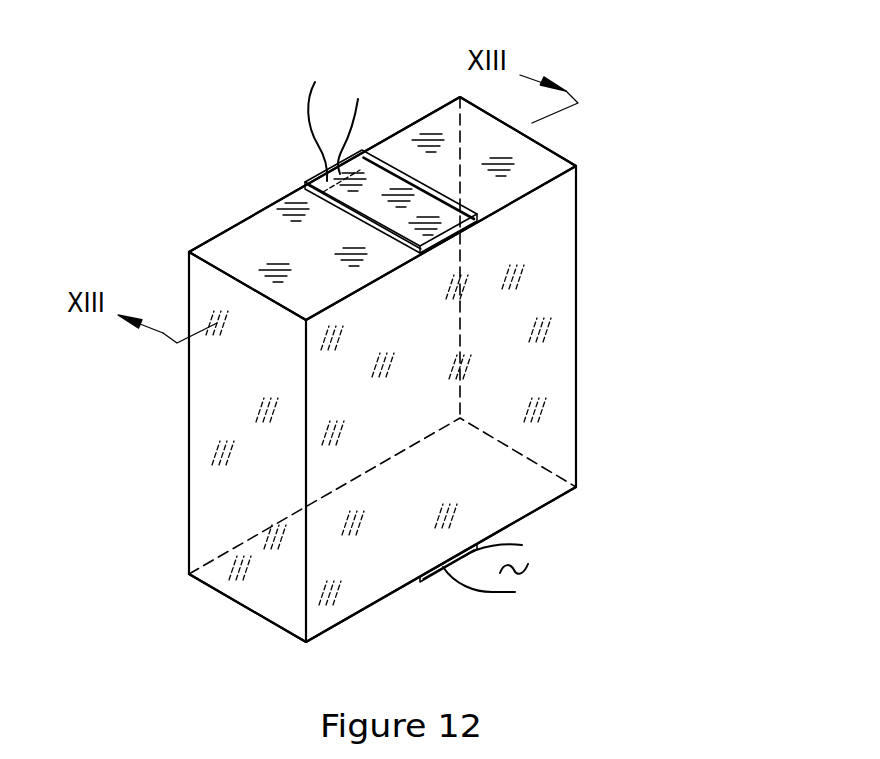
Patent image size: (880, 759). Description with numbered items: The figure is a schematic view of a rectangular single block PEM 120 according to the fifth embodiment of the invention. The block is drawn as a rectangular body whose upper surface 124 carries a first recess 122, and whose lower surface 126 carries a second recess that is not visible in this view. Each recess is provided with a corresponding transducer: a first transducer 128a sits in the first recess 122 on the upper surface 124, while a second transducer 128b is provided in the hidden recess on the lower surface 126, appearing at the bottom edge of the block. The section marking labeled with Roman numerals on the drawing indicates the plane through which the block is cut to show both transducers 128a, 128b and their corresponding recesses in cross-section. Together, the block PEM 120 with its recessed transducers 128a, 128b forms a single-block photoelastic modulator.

The rectangular single block PEM 120 is at (678, 119).
The first recess 122 is at (338, 216).
The upper surface 124 is at (442, 122).
The lower surface 126 is at (538, 490).
The transducer 128a is at (428, 216).
The transducer 128b is at (422, 577).